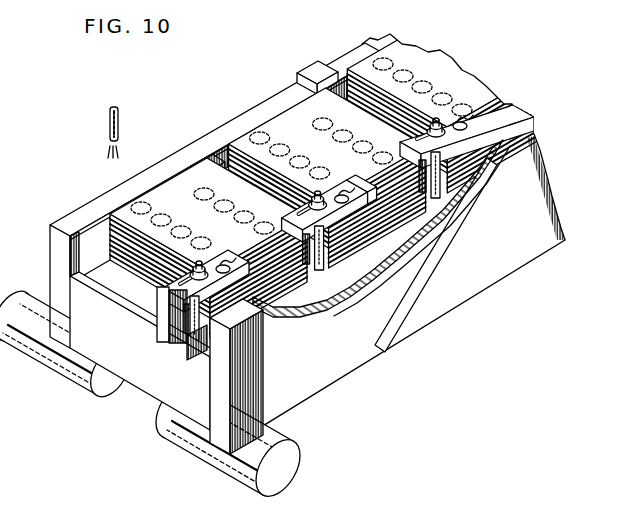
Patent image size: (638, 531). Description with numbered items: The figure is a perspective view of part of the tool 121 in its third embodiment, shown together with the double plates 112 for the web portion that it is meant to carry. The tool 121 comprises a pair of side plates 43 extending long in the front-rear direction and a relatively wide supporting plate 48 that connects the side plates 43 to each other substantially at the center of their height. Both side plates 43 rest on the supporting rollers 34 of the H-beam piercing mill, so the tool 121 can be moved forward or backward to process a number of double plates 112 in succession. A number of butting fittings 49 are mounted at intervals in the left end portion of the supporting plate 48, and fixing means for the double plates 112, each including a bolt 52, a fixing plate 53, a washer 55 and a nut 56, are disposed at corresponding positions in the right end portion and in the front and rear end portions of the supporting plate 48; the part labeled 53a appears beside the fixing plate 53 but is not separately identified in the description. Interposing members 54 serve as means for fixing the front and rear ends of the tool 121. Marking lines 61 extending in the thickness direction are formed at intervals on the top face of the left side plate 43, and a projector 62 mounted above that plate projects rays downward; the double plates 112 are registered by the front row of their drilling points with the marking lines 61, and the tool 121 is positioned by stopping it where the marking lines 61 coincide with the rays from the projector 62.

The supporting rollers 34 is at (72, 373).
The side plates 43 is at (62, 256).
The supporting plate 48 is at (163, 352).
The butting fittings 49 is at (198, 162).
The bolt 52 is at (225, 333).
The fixing plate 53 is at (227, 265).
The threaded end of bolt 53a is at (223, 258).
The interposing members 54 is at (158, 312).
The washer 55 is at (163, 289).
The nut 56 is at (199, 263).
The marking lines 61 is at (110, 190).
The projector 62 is at (109, 118).
The double plates 112 is at (134, 236).
The tool 121 is at (214, 128).